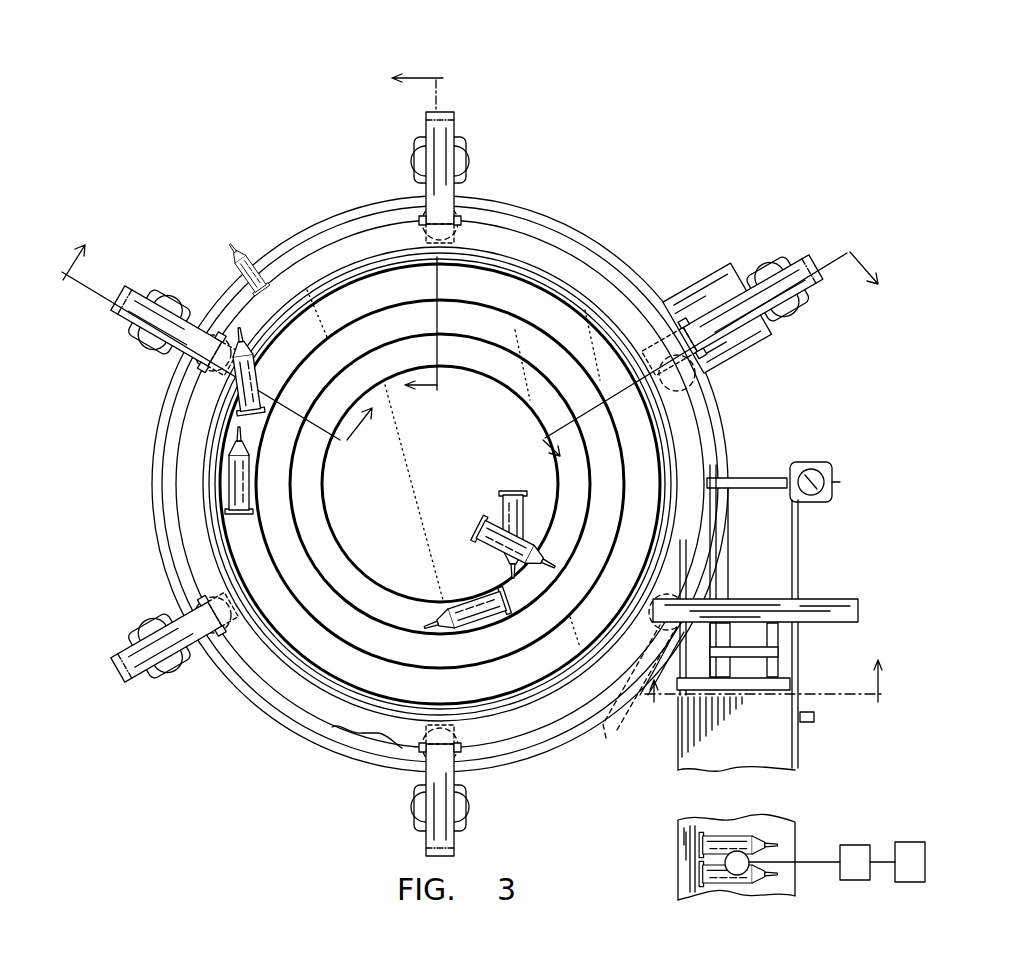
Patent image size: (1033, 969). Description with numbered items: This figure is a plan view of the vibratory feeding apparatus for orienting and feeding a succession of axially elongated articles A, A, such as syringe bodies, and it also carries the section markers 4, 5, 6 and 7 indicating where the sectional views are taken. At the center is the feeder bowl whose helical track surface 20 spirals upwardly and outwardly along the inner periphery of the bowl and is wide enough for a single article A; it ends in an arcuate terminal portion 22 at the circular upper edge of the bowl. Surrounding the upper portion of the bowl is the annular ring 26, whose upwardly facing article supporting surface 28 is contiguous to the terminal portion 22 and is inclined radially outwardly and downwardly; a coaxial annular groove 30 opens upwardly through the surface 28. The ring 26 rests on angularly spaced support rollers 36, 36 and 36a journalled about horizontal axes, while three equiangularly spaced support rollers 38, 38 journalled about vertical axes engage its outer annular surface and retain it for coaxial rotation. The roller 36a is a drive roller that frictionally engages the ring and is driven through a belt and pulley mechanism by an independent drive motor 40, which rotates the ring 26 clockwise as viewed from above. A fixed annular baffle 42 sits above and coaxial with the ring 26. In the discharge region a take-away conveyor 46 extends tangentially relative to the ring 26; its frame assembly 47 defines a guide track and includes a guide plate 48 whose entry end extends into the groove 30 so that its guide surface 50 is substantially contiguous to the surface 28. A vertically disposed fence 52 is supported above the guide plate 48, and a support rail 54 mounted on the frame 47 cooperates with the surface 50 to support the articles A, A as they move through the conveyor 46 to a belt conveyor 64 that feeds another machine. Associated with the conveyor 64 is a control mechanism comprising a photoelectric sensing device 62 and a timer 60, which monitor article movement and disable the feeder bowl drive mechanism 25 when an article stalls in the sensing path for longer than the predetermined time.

The helical track surface 20 is at (492, 645).
The arcuate terminal portion 22 is at (345, 300).
The feeder bowl drive mechanism 25 is at (917, 843).
The annular ring 26 is at (638, 274).
The article supporting surface 28 is at (586, 246).
The annular groove 30 is at (367, 730).
The support rollers 36 is at (170, 373).
The drive roller 36a is at (703, 392).
The support rollers 38 is at (455, 236).
The drive motor 40 is at (700, 280).
The annular baffle 42 is at (322, 693).
The take-away conveyor 46 is at (828, 656).
The frame assembly 47 is at (816, 672).
The guide plate 48 is at (798, 516).
The guide surface 50 is at (700, 557).
The fence 52 is at (640, 695).
The support rail 54 is at (708, 528).
The timer 60 is at (857, 845).
The photoelectric sensing device 62 is at (735, 877).
The belt conveyor 64 is at (797, 833).
The articles A is at (242, 268).
The section line 4- 4 is at (206, 363).
The section line 5- 5 is at (426, 233).
The section line 6- 6 is at (696, 327).
The section line 7- 7 is at (770, 700).